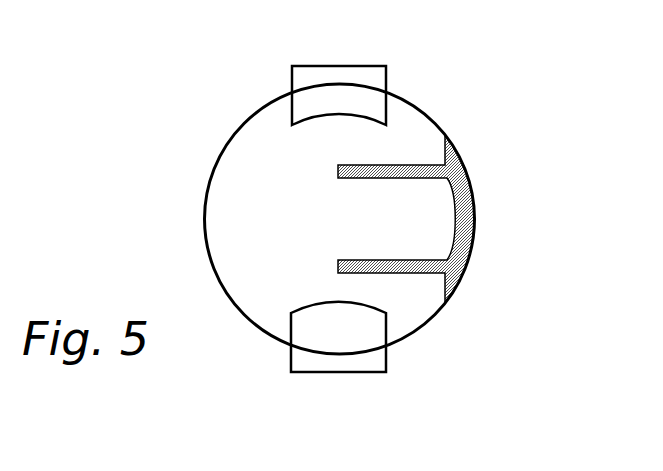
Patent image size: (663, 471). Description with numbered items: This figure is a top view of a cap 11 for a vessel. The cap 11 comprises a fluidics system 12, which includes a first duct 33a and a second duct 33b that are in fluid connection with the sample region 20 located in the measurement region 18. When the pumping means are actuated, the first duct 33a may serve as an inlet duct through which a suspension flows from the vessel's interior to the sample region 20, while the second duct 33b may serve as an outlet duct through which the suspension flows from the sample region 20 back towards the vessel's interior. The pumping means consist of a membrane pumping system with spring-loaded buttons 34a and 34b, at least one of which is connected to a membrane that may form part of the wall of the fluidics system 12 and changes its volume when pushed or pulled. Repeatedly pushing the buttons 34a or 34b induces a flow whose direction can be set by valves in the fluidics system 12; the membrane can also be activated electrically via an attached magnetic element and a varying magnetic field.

The cap 11 is at (238, 220).
The fluidics system 12 is at (340, 173).
The measurement region 18 is at (482, 179).
The sample region 20 is at (468, 227).
The first duct 33a is at (395, 165).
The second duct 33b is at (395, 273).
The spring-loaded button 34a is at (338, 92).
The spring-loaded button 34b is at (338, 345).